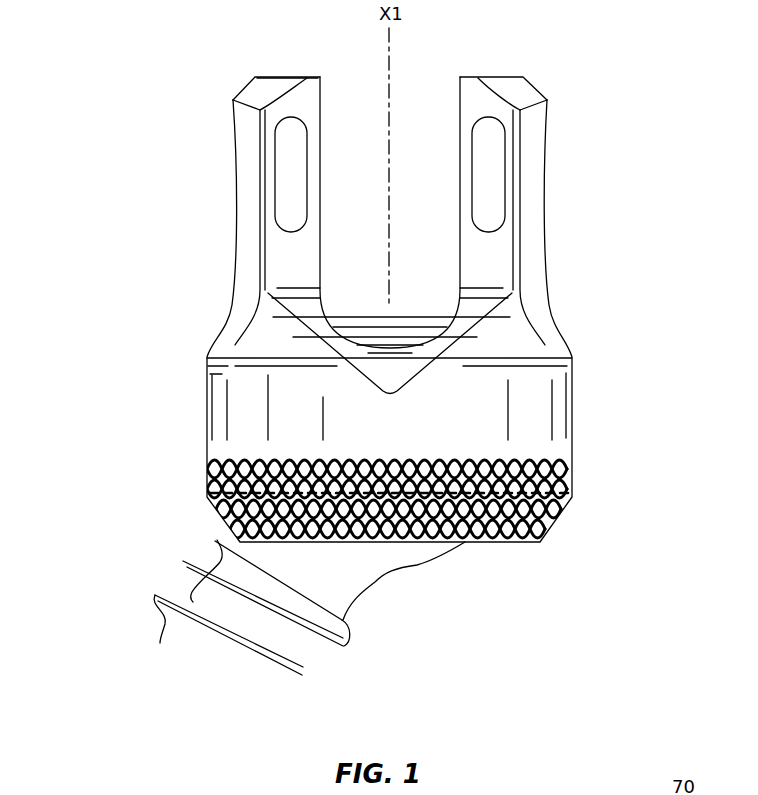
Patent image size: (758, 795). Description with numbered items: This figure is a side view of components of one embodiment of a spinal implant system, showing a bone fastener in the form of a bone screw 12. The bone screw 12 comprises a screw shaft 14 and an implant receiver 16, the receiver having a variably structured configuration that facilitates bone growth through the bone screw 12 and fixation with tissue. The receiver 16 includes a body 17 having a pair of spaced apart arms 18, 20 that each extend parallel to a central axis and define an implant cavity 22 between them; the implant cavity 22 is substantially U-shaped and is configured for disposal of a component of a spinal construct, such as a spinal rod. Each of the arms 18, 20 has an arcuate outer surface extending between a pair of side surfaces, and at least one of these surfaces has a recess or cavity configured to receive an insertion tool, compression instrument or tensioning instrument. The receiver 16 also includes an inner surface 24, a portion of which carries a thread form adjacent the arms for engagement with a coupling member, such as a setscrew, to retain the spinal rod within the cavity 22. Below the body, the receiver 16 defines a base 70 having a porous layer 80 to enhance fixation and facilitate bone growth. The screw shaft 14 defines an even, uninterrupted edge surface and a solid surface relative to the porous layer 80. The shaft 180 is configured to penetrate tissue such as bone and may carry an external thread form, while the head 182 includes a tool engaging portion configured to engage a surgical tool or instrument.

The bone screw 12 is at (94, 124).
The screw shaft 14 is at (452, 594).
The implant receiver 16 is at (600, 254).
The body 17 is at (525, 363).
The arm 18 is at (250, 143).
The arm 20 is at (535, 129).
The implant cavity 22 is at (439, 102).
The inner surface 24 is at (320, 117).
The base 70 is at (573, 472).
The porous layer 80 is at (572, 485).
The shaft 180 is at (268, 657).
The head 182 is at (402, 555).